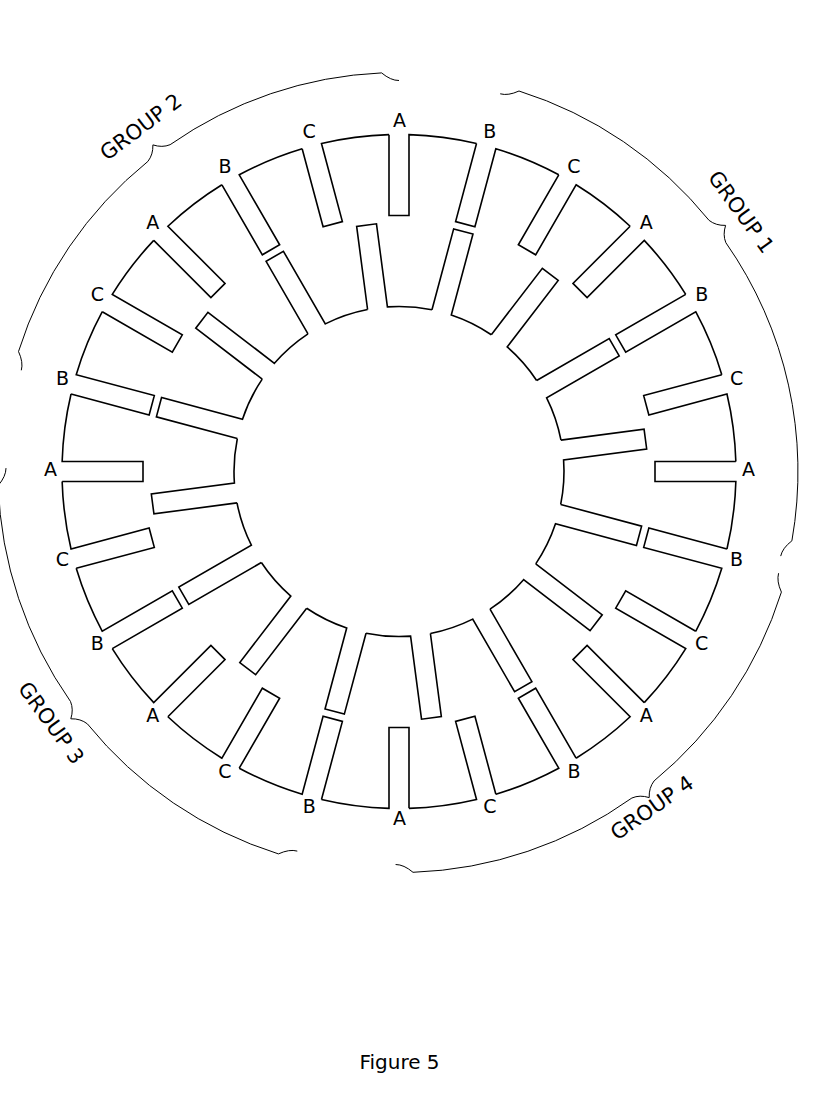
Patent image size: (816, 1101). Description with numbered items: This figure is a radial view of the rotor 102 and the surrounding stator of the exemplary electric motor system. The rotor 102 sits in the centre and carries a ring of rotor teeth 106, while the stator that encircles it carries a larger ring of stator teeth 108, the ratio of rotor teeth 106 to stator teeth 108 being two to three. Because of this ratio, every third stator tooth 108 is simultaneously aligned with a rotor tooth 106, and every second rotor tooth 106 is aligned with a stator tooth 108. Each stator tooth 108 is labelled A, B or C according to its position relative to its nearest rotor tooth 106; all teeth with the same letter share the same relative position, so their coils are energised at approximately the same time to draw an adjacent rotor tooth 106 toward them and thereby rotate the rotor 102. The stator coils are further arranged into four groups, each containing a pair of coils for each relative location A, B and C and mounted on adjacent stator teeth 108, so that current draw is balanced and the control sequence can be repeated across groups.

The rotor 102 is at (443, 607).
The rotor tooth 106 is at (370, 267).
The stator tooth 108 is at (318, 768).